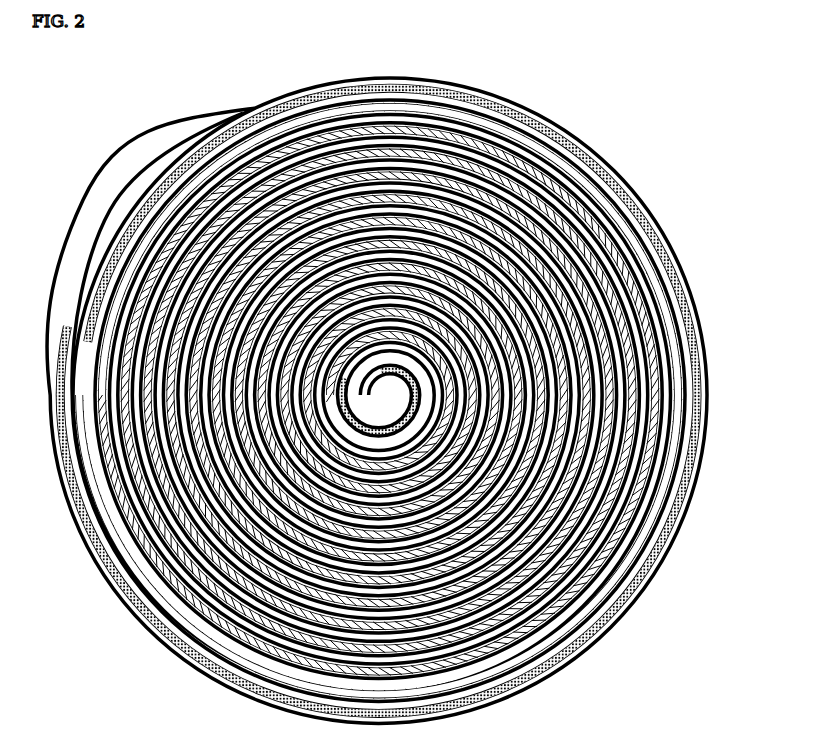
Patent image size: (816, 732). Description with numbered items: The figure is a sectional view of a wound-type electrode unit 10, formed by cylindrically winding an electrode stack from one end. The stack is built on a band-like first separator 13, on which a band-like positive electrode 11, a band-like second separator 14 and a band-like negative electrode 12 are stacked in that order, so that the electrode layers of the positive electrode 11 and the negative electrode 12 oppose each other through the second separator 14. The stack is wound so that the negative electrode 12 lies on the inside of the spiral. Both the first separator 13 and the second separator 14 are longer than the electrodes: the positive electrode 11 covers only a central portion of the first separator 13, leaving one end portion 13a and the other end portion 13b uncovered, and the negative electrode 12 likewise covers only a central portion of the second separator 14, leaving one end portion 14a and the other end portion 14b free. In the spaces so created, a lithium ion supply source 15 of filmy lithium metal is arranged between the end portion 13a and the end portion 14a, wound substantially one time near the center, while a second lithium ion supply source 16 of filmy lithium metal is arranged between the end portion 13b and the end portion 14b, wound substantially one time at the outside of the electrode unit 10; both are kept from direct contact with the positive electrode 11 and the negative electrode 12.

The electrode unit 10 is at (620, 150).
The positive electrode 11 is at (395, 383).
The negative electrode 12 is at (401, 370).
The first separator 13 is at (602, 500).
The one end portion of the first separator 13a is at (414, 348).
The other end portion of the first separator 13b is at (640, 596).
The second separator 14 is at (590, 330).
The one end portion of the second separator 14a is at (400, 366).
The other end portion of the second separator 14b is at (556, 652).
The lithium ion supply source 15 is at (381, 372).
The lithium ion supply source 16 is at (531, 108).